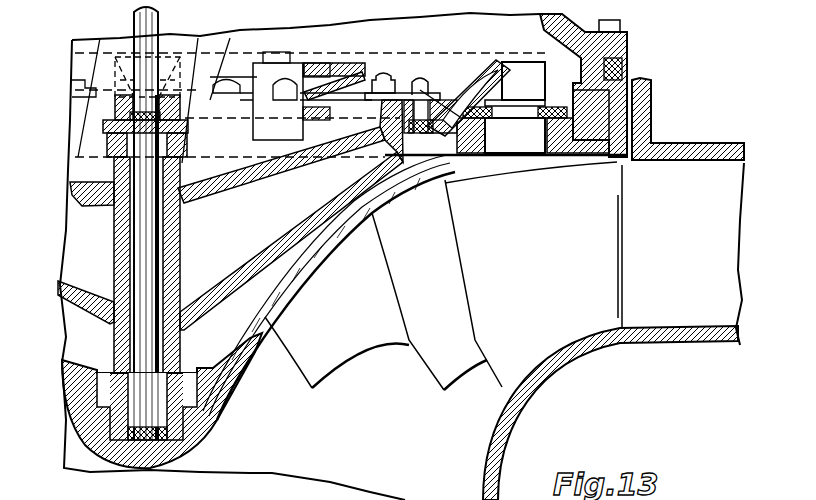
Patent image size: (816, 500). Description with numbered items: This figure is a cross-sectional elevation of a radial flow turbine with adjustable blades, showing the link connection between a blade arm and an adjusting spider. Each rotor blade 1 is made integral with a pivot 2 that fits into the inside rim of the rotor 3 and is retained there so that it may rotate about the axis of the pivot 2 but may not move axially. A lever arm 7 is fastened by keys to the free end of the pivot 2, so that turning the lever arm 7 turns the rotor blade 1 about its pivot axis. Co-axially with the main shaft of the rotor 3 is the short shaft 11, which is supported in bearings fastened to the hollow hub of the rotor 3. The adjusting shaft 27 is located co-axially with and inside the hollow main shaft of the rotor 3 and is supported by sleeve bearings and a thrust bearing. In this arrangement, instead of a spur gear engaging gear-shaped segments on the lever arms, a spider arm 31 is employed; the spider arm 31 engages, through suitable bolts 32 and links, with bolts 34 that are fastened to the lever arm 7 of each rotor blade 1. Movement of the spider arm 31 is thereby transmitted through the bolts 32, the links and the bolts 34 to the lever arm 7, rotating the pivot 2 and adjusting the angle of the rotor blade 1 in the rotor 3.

The rotor blade 1 is at (443, 276).
The pivot 2 is at (533, 107).
The rotor 3 is at (232, 392).
The lever arm 7 is at (460, 70).
The short shaft 11 is at (138, 262).
The adjusting shaft 27 is at (158, 29).
The spider arm 31 is at (296, 220).
The bolt 32 is at (385, 78).
The bolt 34 is at (420, 80).